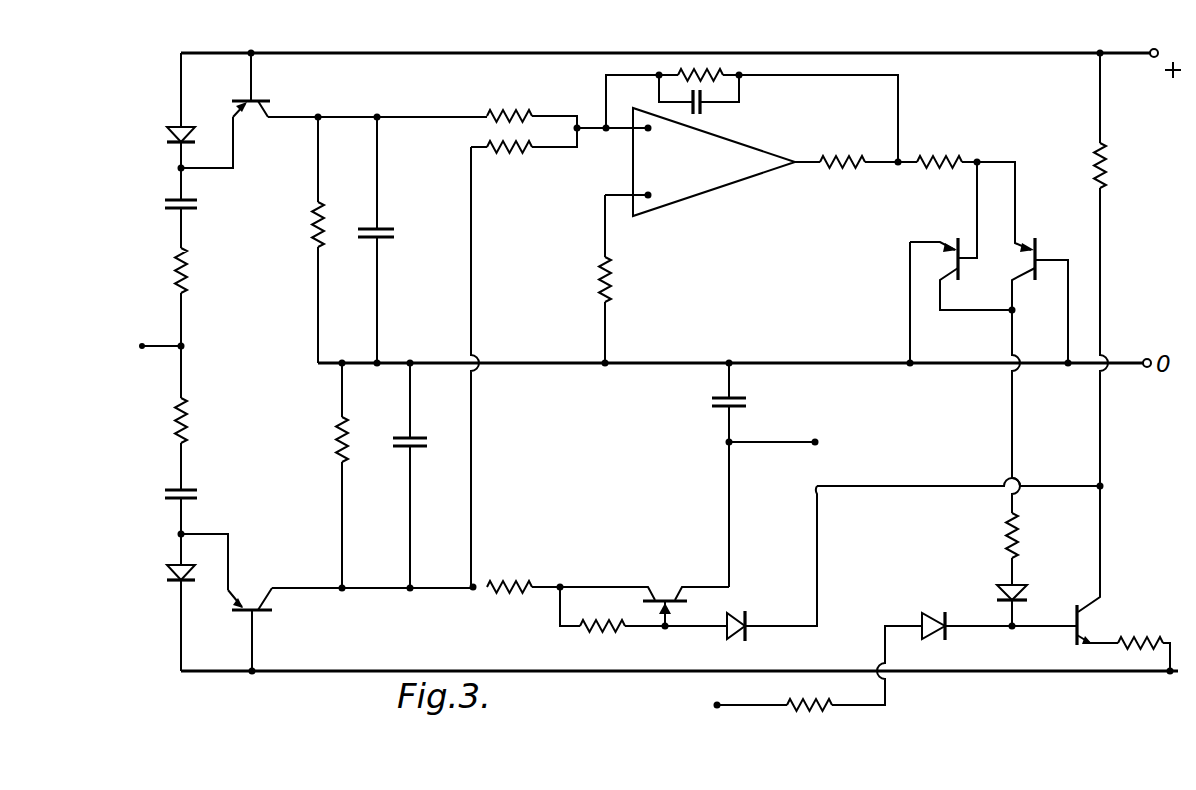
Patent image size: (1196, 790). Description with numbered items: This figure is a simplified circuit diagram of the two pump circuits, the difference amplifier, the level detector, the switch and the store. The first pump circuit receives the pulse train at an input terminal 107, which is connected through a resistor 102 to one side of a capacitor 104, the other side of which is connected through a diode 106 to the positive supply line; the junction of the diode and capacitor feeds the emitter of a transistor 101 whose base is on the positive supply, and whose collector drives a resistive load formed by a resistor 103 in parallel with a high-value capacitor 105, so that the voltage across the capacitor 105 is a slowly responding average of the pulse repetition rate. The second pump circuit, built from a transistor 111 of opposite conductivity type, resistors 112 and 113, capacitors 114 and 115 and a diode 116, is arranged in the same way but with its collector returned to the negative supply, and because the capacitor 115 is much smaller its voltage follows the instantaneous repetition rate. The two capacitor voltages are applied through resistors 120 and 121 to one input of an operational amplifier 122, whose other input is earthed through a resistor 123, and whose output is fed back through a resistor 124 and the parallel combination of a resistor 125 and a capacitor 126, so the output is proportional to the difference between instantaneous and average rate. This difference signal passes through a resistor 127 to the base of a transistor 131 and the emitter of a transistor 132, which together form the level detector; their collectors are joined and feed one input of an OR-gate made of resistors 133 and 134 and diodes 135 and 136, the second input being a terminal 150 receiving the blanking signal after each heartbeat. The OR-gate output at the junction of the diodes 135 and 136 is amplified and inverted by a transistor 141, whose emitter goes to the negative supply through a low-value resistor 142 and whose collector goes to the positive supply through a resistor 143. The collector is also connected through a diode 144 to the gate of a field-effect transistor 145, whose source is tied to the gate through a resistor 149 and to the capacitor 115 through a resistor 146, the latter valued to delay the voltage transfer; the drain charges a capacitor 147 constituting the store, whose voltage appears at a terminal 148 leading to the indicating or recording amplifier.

The transistor 101 is at (267, 98).
The resistor 102 is at (190, 283).
The resistor 103 is at (312, 215).
The capacitor 104 is at (196, 206).
The capacitor 105 is at (386, 226).
The diode 106 is at (185, 127).
The input terminal 107 is at (143, 350).
The transistor 111 is at (268, 614).
The resistor 112 is at (190, 425).
The resistor 113 is at (337, 450).
The capacitor 114 is at (190, 490).
The capacitor 115 is at (402, 452).
The diode 116 is at (190, 585).
The resistor 120 is at (502, 110).
The resistor 121 is at (516, 150).
The operational amplifier 122 is at (713, 175).
The resistor 123 is at (615, 268).
The resistor 124 is at (840, 170).
The resistor 125 is at (722, 78).
The capacitor 126 is at (705, 110).
The resistor 127 is at (925, 158).
The transistor 131 is at (958, 236).
The transistor 132 is at (1052, 222).
The resistor 133 is at (1003, 540).
The resistor 134 is at (828, 706).
The diode 135 is at (990, 592).
The diode 136 is at (920, 620).
The transistor 141 is at (1085, 613).
The resistor 142 is at (1125, 648).
The resistor 143 is at (1108, 168).
The diode 144 is at (748, 612).
The field-effect transistor 145 is at (666, 598).
The resistor 146 is at (510, 580).
The capacitor 147 is at (716, 406).
The terminal 148 is at (838, 430).
The resistor 149 is at (606, 628).
The terminal 150 is at (718, 703).